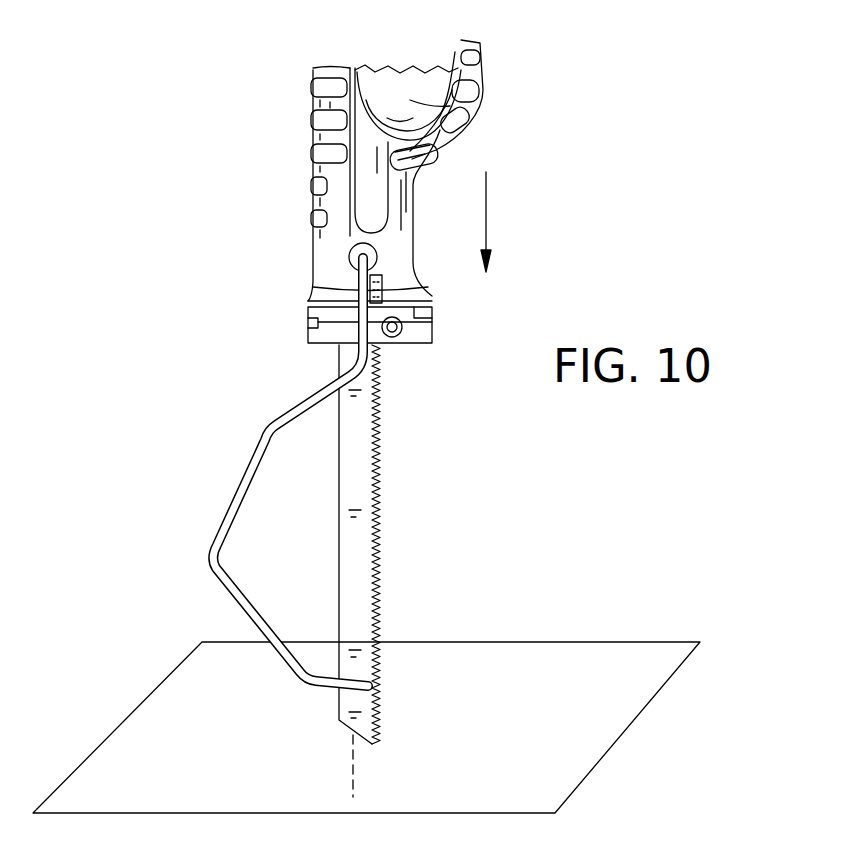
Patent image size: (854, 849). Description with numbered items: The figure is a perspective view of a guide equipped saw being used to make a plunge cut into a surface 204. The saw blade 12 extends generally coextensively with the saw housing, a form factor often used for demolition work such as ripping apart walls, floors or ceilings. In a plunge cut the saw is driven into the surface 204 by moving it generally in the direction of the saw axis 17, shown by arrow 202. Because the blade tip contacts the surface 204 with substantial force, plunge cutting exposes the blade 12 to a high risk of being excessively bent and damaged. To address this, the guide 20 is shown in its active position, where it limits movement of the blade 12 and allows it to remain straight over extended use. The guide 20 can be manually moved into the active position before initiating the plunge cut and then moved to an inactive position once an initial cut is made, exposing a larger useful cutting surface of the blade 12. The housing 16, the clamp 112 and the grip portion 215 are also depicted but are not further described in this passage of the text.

The saw blade 12 is at (384, 663).
The housing 16 is at (311, 265).
The saw axis 17 is at (358, 765).
The guide 20 is at (226, 514).
The blade clamp 112 is at (384, 278).
The arrow 202 is at (487, 197).
The surface 204 is at (554, 763).
The grip portion 215 is at (472, 84).